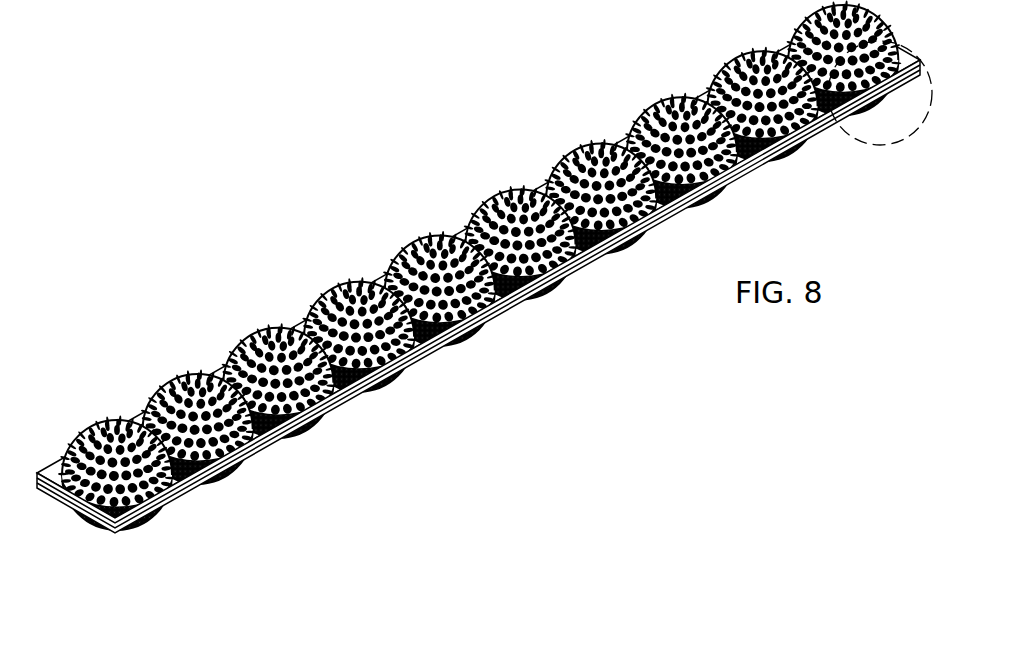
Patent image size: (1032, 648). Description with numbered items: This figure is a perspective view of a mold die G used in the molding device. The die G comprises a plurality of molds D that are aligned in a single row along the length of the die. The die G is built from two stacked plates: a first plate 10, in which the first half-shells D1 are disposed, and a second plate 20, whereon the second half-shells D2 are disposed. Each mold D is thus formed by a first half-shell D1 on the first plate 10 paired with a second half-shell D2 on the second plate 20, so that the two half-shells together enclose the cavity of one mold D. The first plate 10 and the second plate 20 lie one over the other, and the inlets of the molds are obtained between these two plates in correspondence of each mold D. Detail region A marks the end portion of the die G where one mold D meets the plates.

The first plate 10 is at (50, 465).
The second plate 20 is at (197, 503).
The mold D is at (121, 455).
The first half-shell D1 is at (97, 413).
The second half-shell D2 is at (117, 548).
The die G is at (493, 178).
The detail region A is at (880, 122).